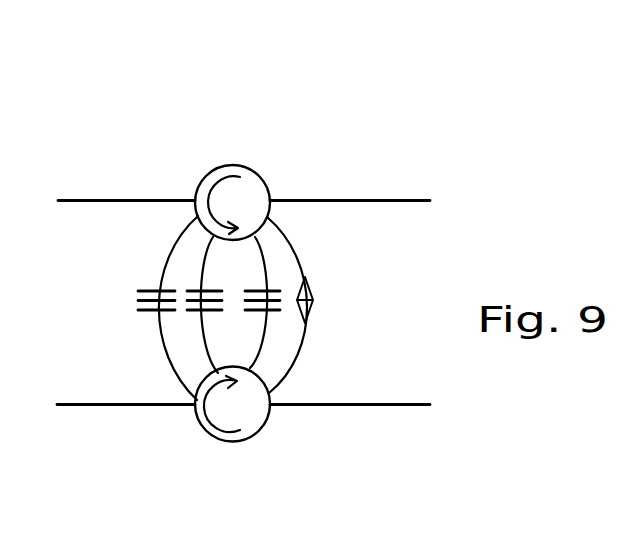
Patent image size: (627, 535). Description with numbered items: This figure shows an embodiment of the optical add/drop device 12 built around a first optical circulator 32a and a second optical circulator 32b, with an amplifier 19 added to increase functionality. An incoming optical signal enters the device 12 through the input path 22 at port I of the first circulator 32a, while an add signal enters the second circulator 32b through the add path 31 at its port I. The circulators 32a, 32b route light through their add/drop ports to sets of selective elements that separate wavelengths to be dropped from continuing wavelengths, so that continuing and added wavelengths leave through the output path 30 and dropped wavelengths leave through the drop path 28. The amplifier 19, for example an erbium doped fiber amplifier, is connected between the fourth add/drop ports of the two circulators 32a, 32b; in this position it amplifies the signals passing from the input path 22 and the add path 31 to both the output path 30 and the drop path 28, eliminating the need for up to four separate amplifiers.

The OAD device 12 is at (160, 122).
The input path 22 is at (113, 197).
The output path 30 is at (337, 197).
The add path 31 is at (158, 407).
The drop path 28 is at (342, 407).
The first optical circulator 32a is at (233, 163).
The second optical circulator 32b is at (237, 442).
The amplifier 19 is at (312, 293).